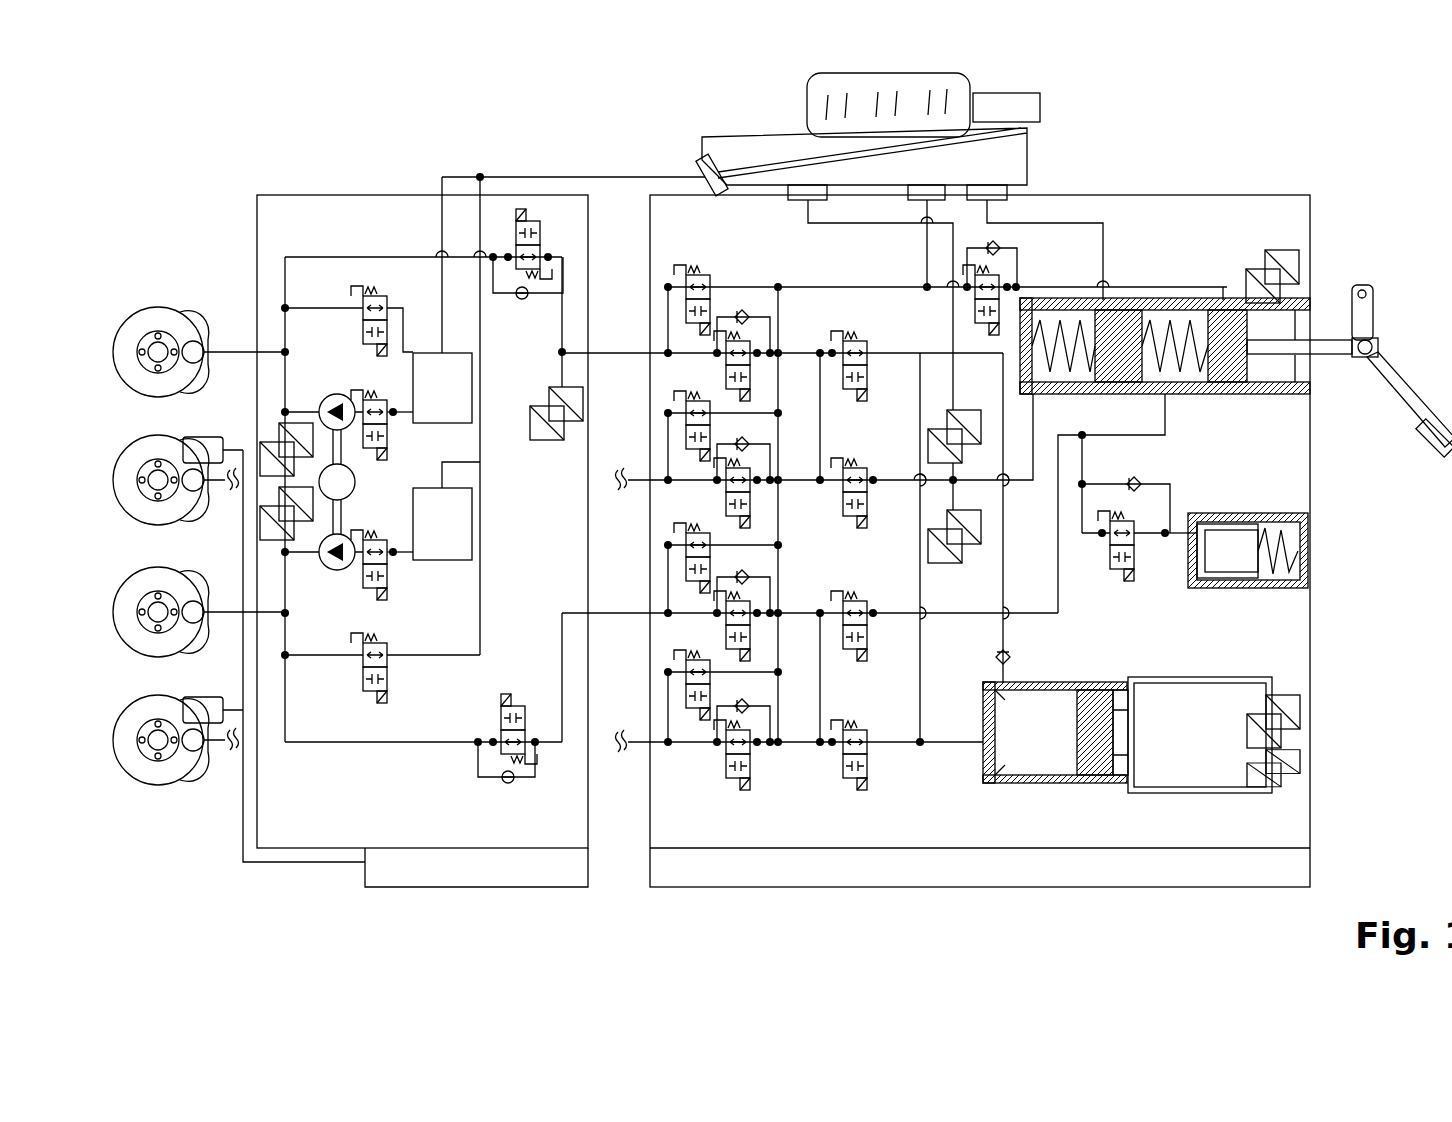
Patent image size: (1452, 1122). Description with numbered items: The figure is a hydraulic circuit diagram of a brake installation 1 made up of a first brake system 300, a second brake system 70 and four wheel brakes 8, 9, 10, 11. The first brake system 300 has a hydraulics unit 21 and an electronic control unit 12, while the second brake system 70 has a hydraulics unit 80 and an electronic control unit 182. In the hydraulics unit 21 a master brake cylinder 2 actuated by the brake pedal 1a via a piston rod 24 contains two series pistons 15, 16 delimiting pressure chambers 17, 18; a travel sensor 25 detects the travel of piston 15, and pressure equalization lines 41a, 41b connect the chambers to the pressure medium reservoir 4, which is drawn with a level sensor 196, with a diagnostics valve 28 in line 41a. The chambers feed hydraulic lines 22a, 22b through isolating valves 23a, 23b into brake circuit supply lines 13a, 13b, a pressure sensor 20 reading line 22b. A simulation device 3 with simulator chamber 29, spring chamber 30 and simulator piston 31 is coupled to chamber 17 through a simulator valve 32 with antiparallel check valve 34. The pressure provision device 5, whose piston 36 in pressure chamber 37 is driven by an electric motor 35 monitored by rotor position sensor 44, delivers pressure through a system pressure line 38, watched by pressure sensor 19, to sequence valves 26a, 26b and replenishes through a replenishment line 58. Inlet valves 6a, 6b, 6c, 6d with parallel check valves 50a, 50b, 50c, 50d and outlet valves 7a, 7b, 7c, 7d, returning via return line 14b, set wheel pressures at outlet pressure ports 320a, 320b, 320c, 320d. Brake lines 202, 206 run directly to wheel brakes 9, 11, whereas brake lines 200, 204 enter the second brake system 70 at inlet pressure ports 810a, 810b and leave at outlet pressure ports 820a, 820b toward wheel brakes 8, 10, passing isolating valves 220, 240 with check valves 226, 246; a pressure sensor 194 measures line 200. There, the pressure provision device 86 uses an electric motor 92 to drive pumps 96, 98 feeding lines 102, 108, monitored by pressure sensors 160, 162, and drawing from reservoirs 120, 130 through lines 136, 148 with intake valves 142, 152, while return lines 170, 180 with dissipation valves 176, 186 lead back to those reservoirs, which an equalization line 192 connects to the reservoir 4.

The brake installation 1 is at (1103, 140).
The brake pedal 1a is at (1394, 387).
The master brake cylinder 2 is at (1228, 398).
The simulation device 3 is at (1330, 547).
The first pressure medium reservoir 4 is at (752, 135).
The first electrically controllable pressure provision device 5 is at (1326, 706).
The inlet valve 6a is at (760, 375).
The inlet valve 6b is at (760, 503).
The inlet valve 6c is at (760, 633).
The inlet valve 6d is at (741, 771).
The outlet valve 7a is at (700, 275).
The outlet valve 7b is at (672, 410).
The outlet valve 7c is at (672, 542).
The outlet valve 7d is at (672, 669).
The first wheel brake 8 is at (195, 320).
The second wheel brake 9 is at (190, 515).
The third wheel brake 10 is at (196, 592).
The fourth wheel brake 11 is at (190, 765).
The electronic open-loop and closed-loop control unit 12 is at (1085, 887).
The brake circuit supply line 13a is at (822, 675).
The brake circuit supply line 13b is at (821, 426).
The return line 14b is at (855, 285).
The first master brake cylinder piston 15 is at (1226, 310).
The second piston 16 is at (1125, 310).
The pressure chamber 17 is at (1188, 382).
The pressure chamber 18 is at (1065, 382).
The pressure sensor 19 is at (955, 561).
The pressure sensor 20 is at (958, 410).
The hydraulics unit 21 is at (1292, 214).
The hydraulic line 22a is at (1165, 416).
The hydraulic line 22b is at (955, 486).
The isolating valve 23a is at (868, 521).
The isolating valve 23b is at (868, 623).
The piston rod 24 is at (1337, 349).
The travel sensor 25 is at (1299, 276).
The sequence valve 26a is at (867, 379).
The sequence valve 26b is at (843, 752).
The diagnostics valve 28 is at (1000, 298).
The simulator chamber 29 is at (1200, 522).
The simulator spring chamber 30 is at (1275, 522).
The simulator piston 31 is at (1220, 567).
The simulator valve 32 is at (1112, 561).
The check valve 34 is at (1140, 480).
The electric motor 35 is at (1200, 793).
The pressure piston 36 is at (1100, 795).
The pressure chamber 37 is at (1040, 790).
The system pressure line 38 is at (922, 671).
The pressure equalization line 41a is at (1223, 296).
The pressure equalization line 41b is at (1103, 265).
The rotor position sensor 44 is at (1300, 723).
The check valve 50a is at (745, 311).
The check valve 50b is at (750, 444).
The check valve 50c is at (750, 578).
The check valve 50d is at (750, 706).
The replenishment line 58 is at (1006, 513).
The second brake system 70 is at (205, 232).
The hydraulics unit 80 is at (338, 195).
The second electrically controllable pressure provision device 86 is at (322, 428).
The electric motor 92 is at (356, 482).
The pump 96 is at (338, 393).
The pump 98 is at (337, 571).
The hydraulic line 102 is at (283, 380).
The line 108 is at (315, 618).
The second pressure medium reservoir 120 is at (452, 423).
The second pressure medium reservoir 130 is at (452, 560).
The hydraulic line 136 is at (388, 392).
The intake valve 142 is at (384, 438).
The hydraulic line 148 is at (387, 562).
The intake valve 152 is at (386, 590).
The pressure sensor 160 is at (262, 425).
The pressure sensor 162 is at (260, 522).
The hydraulic return line 170 is at (330, 308).
The dissipation valve 176 is at (362, 321).
The hydraulic return line 180 is at (478, 600).
The electronic open-loop and closed-loop control unit 182 is at (400, 887).
The dissipation valve 186 is at (388, 673).
The common hydraulic equalization line 192 is at (605, 177).
The pressure sensor 194 is at (566, 441).
The fluid level sensor 196 is at (702, 160).
The brake line 200 is at (228, 345).
The brake line 202 is at (225, 482).
The brake line 204 is at (225, 620).
The brake line 206 is at (225, 745).
The isolating valve 220 is at (537, 240).
The check valve 226 is at (522, 300).
The isolating valve 240 is at (520, 712).
The check valve 246 is at (503, 783).
The first brake system 300 is at (1288, 180).
The first outlet pressure port 320a is at (646, 352).
The second outlet pressure port 320b is at (646, 479).
The third outlet pressure port 320c is at (646, 612).
The fourth outlet pressure port 320d is at (646, 741).
The first inlet pressure port 810a is at (578, 348).
The second inlet pressure port 810b is at (585, 608).
The first outlet pressure port 820a is at (288, 338).
The second outlet pressure port 820b is at (262, 622).